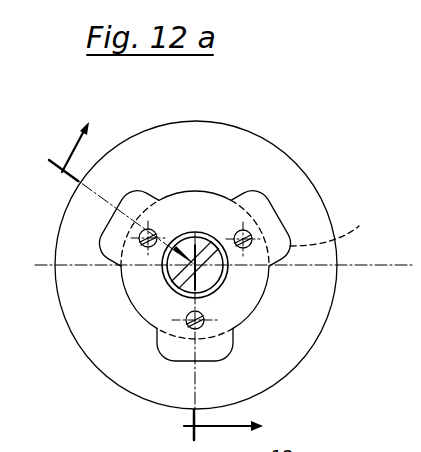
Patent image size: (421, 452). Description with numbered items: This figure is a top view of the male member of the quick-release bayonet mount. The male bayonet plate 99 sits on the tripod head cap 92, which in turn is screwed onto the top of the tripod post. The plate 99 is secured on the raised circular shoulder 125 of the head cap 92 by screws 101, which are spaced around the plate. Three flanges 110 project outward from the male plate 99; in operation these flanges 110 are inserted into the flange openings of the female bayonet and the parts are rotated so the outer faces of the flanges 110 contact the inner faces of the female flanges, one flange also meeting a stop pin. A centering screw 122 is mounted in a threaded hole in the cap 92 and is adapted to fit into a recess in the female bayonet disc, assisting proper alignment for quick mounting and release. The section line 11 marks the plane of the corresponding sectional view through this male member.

The male bayonet plate 99 is at (200, 180).
The centering screw 122 is at (269, 172).
The tripod head cap 92 is at (249, 232).
The screws 101 is at (272, 236).
The flanges 110 is at (285, 243).
The raised circular shoulder 125 is at (343, 225).
The section line 11 is at (141, 283).